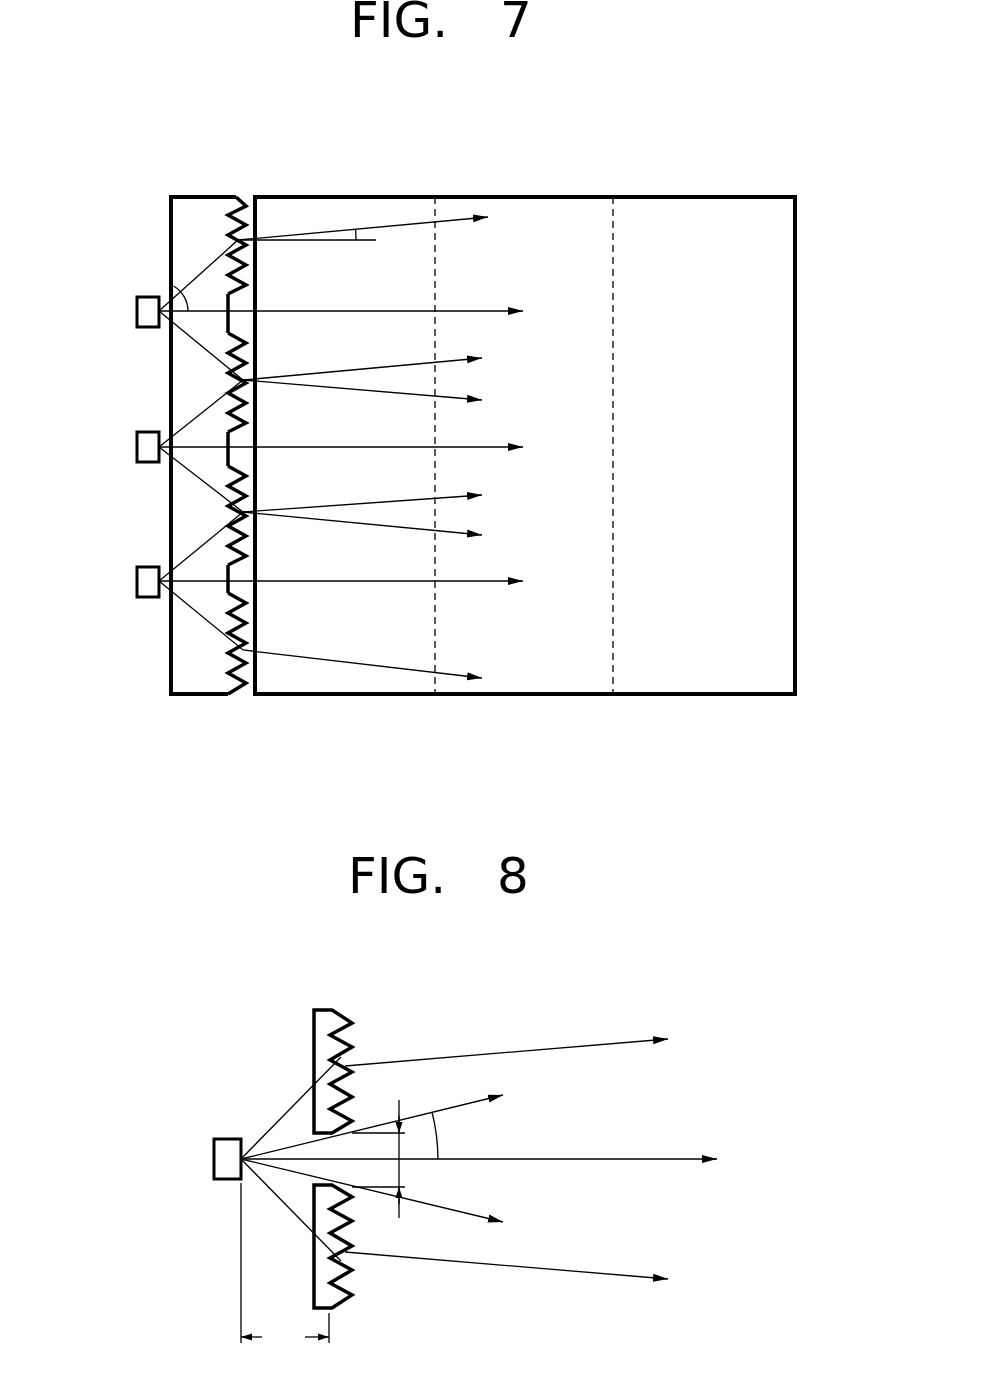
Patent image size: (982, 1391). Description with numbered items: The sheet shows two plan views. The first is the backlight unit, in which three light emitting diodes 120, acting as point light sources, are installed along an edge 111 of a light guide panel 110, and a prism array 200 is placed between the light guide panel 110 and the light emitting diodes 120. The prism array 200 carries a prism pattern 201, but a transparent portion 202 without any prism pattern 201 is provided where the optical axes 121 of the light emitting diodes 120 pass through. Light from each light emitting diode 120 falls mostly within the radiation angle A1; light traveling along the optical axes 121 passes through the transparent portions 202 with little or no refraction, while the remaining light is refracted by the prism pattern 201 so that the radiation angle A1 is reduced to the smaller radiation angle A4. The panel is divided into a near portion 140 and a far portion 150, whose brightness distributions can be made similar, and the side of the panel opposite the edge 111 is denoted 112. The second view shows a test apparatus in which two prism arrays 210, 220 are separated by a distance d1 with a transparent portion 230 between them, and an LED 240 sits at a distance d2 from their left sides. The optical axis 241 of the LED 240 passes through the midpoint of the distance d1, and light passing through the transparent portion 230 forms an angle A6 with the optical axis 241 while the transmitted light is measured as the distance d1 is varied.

In FIG. 7, the light guide panel 110 is at (563, 435).
In FIG. 7, the edge 111 is at (252, 328).
In FIG. 7, the light exit side surface 112 is at (774, 421).
In FIG. 7, the light emitting diodes 120 is at (137, 312).
In FIG. 7, the optical axes 121 is at (486, 311).
In FIG. 7, the near portion 140 is at (367, 697).
In FIG. 7, the far portion 150 is at (682, 697).
In FIG. 7, the prism array 200 is at (244, 502).
In FIG. 7, the prism pattern 201 is at (228, 696).
In FIG. 7, the transparent portion 202 is at (250, 598).
In FIG. 7, the radiation angle A1 is at (176, 283).
In FIG. 7, the radiation angle A4 is at (359, 232).
In FIG. 8, the prism array 210 is at (338, 1012).
In FIG. 8, the prism array 220 is at (340, 1309).
In FIG. 8, the transparent portion 230 is at (320, 1157).
In FIG. 8, the LED 240 is at (214, 1159).
In FIG. 8, the optical axis 241 is at (657, 1158).
In FIG. 8, the angle A6 is at (454, 1135).
In FIG. 8, the distance d1 is at (400, 1168).
In FIG. 8, the distance d2 is at (285, 1268).